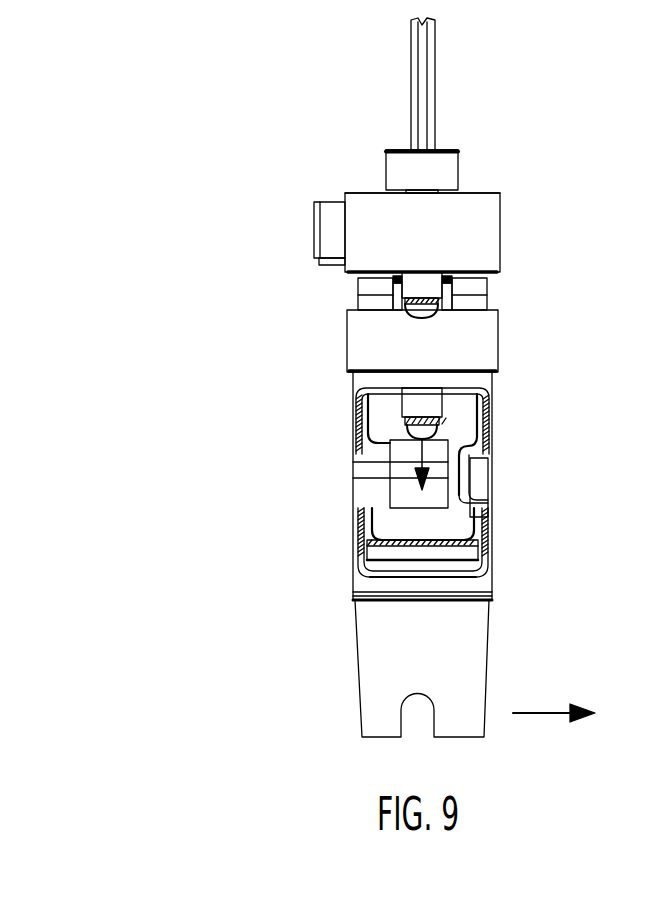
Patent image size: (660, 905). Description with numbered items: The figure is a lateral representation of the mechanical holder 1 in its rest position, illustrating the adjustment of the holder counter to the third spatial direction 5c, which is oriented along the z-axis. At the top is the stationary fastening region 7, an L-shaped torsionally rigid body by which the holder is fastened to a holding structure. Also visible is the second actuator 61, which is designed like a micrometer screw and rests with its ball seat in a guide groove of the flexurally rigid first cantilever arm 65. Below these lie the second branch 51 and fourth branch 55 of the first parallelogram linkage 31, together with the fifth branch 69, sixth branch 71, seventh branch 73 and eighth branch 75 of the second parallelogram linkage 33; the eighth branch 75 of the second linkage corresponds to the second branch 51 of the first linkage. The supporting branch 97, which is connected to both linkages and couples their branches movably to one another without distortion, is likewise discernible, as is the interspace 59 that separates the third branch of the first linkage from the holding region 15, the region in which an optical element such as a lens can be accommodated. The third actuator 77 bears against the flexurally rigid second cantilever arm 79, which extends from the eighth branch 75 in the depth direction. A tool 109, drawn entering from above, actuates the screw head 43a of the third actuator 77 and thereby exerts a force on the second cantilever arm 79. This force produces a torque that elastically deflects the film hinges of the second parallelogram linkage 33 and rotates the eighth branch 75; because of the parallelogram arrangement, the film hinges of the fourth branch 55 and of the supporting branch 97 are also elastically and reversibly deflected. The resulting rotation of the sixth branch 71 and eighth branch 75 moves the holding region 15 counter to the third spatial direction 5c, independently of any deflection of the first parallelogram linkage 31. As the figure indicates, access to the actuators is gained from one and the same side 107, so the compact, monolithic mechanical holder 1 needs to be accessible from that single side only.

The mechanical holder 1 is at (620, 100).
The third spatial direction 5c is at (542, 736).
The stationary fastening region 7 is at (488, 218).
The holding region 15 is at (576, 641).
The first parallelogram linkage 31 is at (424, 463).
The second parallelogram linkage 33 is at (424, 463).
The screw head 43a is at (445, 352).
The second branch 51 is at (394, 480).
The fourth branch 55 is at (424, 463).
The interspace 59 is at (536, 597).
The second actuator 61 is at (427, 282).
The first cantilever arm 65 is at (490, 330).
The fifth branch 69 is at (424, 463).
The sixth branch 71 is at (385, 444).
The seventh branch 73 is at (448, 572).
The eighth branch 75 is at (394, 480).
The third actuator 77 is at (447, 289).
The second cantilever arm 79 is at (400, 500).
The supporting branch 97 is at (427, 392).
The side 107 is at (287, 132).
The tool 109 is at (436, 87).